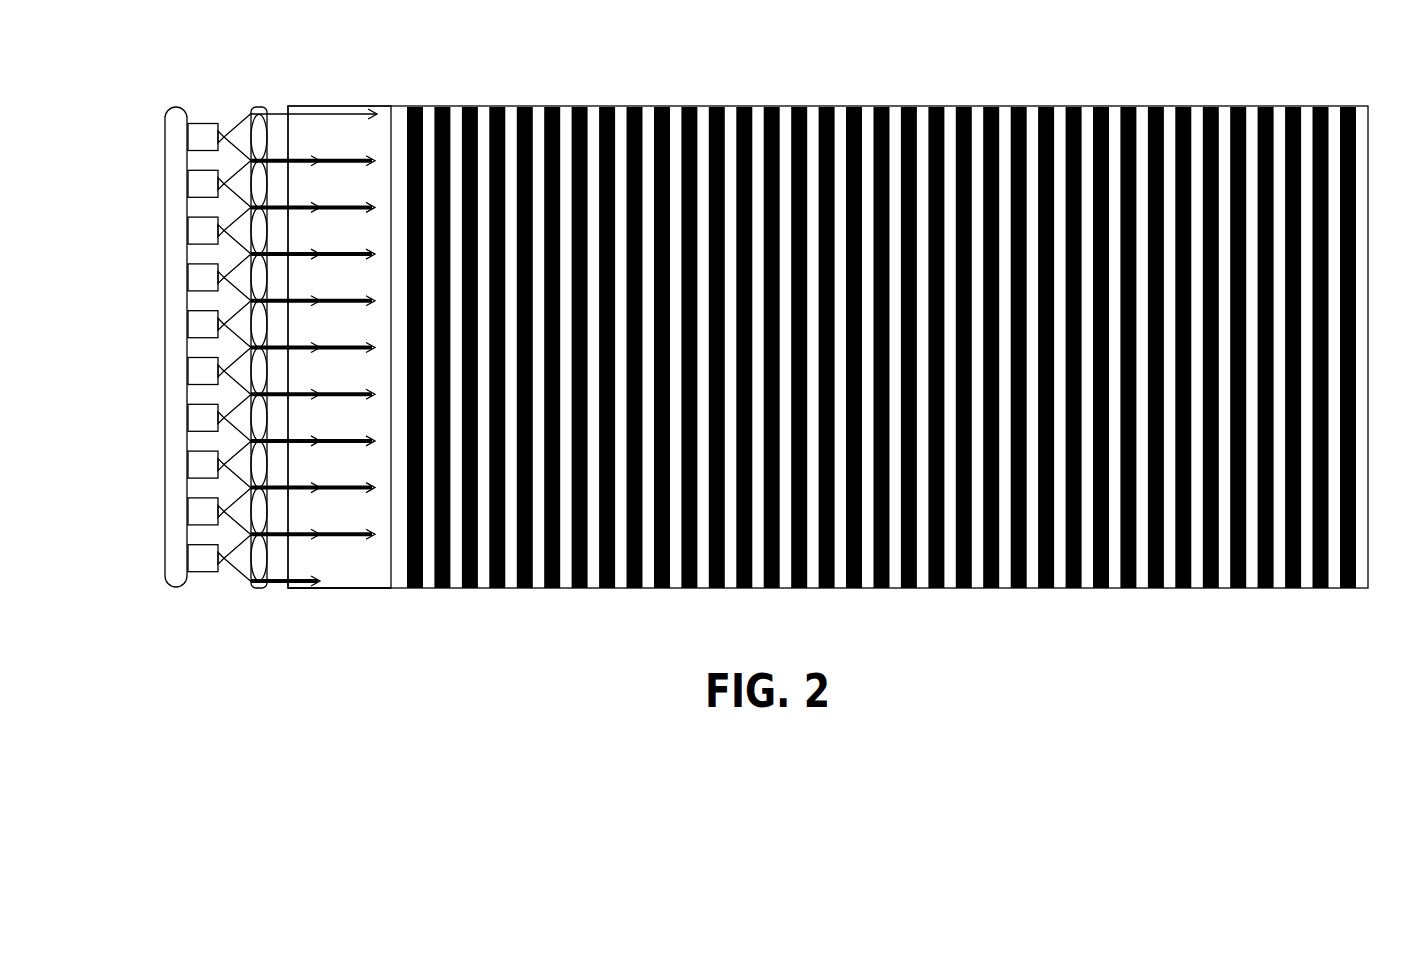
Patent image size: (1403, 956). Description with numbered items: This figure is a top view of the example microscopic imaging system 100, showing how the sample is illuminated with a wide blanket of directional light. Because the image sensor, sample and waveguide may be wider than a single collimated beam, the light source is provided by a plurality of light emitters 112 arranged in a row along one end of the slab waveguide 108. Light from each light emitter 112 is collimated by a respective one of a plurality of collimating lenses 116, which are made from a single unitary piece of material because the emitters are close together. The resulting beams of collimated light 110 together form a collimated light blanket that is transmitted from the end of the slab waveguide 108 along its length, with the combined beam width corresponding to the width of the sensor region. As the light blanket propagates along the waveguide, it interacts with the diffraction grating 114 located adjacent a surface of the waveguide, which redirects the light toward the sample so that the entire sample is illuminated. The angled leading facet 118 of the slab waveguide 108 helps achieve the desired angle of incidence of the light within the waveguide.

The imaging system 100 is at (1153, 65).
The slab waveguide 108 is at (400, 108).
The beam of collimated light 110 is at (340, 160).
The light emitter 112 is at (197, 187).
The diffraction grating 114 is at (964, 107).
The collimating lens 116 is at (262, 183).
The leading facet 118 is at (350, 582).